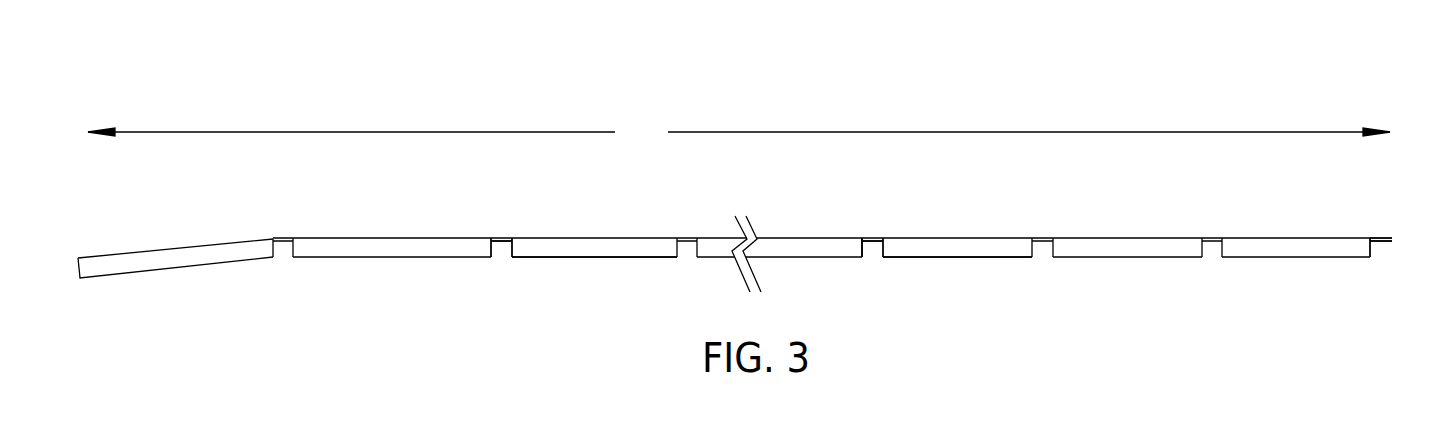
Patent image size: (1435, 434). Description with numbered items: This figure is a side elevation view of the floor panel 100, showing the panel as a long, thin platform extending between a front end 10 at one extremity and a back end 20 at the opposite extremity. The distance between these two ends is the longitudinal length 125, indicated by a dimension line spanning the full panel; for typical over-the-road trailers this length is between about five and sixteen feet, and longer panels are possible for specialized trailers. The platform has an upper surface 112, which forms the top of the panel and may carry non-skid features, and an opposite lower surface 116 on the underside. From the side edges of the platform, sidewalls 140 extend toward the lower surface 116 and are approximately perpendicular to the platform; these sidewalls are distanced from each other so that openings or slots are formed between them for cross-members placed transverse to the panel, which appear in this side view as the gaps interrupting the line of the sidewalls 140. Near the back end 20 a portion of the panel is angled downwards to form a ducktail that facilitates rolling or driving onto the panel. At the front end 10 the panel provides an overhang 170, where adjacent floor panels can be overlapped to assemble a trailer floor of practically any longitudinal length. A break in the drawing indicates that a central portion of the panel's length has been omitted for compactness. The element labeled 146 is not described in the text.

The floor panel 100 is at (415, 108).
The back end 20 is at (78, 258).
The longitudinal length 125 is at (739, 135).
The upper surface 112 is at (567, 237).
The first segment 146 is at (623, 257).
The lower surface 116 is at (873, 240).
The sidewall 140 is at (937, 248).
The front end 10 is at (1392, 238).
The overhang 170 is at (1379, 241).